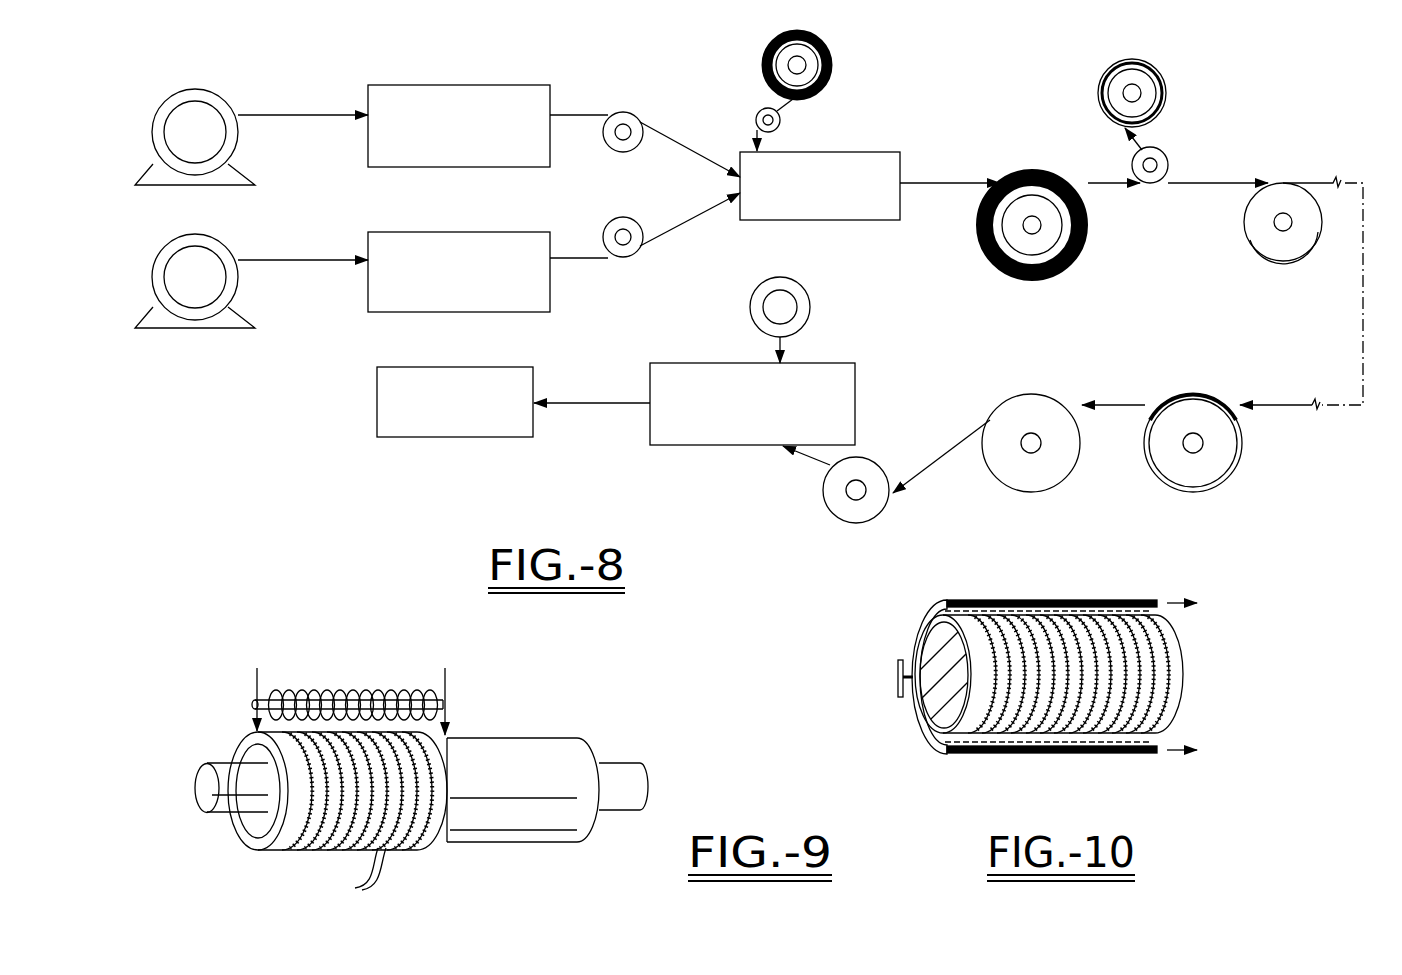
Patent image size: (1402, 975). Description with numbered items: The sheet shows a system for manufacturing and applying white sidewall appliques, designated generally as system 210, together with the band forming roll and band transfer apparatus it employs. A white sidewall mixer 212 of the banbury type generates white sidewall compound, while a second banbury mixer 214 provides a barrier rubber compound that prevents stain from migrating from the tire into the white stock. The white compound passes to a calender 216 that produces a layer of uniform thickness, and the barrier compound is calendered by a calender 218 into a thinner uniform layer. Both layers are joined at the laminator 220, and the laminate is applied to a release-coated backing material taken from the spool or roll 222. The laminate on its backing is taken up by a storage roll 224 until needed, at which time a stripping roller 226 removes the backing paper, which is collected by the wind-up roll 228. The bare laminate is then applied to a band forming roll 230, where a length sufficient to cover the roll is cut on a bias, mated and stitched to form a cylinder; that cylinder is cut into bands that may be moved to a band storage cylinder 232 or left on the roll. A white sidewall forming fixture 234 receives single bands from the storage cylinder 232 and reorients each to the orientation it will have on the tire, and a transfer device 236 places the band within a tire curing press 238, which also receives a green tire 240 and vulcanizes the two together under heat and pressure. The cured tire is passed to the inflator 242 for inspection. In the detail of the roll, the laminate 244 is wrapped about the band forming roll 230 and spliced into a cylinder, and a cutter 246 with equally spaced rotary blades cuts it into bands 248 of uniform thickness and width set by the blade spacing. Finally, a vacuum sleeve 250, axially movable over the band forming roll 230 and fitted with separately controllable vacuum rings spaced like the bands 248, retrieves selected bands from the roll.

In FIG. 8, the system for manufacturing and applying white sidewall appliques 210 is at (305, 423).
In FIG. 8, the white sidewall mixer 212 is at (186, 89).
In FIG. 8, the banbury mixer 214 is at (186, 234).
In FIG. 8, the calender 216 is at (438, 85).
In FIG. 8, the calender 218 is at (438, 232).
In FIG. 8, the laminator 220 is at (850, 152).
In FIG. 8, the backing material roll 222 is at (762, 60).
In FIG. 8, the storage roll 224 is at (1020, 172).
In FIG. 8, the stripping roller 226 is at (1168, 157).
In FIG. 8, the wind-up roll 228 is at (1098, 82).
In FIG. 8, the band forming roll 230 is at (1246, 233).
In FIG. 9, the band forming roll 230 is at (527, 738).
In FIG. 10, the band forming roll 230 is at (935, 645).
In FIG. 8, the band storage cylinder 232 is at (1200, 395).
In FIG. 8, the white sidewall forming fixture 234 is at (1042, 395).
In FIG. 8, the transfer device 236 is at (877, 516).
In FIG. 8, the tire curing press 238 is at (855, 383).
In FIG. 8, the green tire 240 is at (810, 305).
In FIG. 8, the inflator 242 is at (448, 367).
In FIG. 9, the laminate 244 is at (448, 822).
In FIG. 9, the cutter 246 is at (346, 689).
In FIG. 9, the bands 248 is at (347, 873).
In FIG. 10, the bands 248 is at (1168, 652).
In FIG. 10, the vacuum sleeve 250 is at (1032, 600).